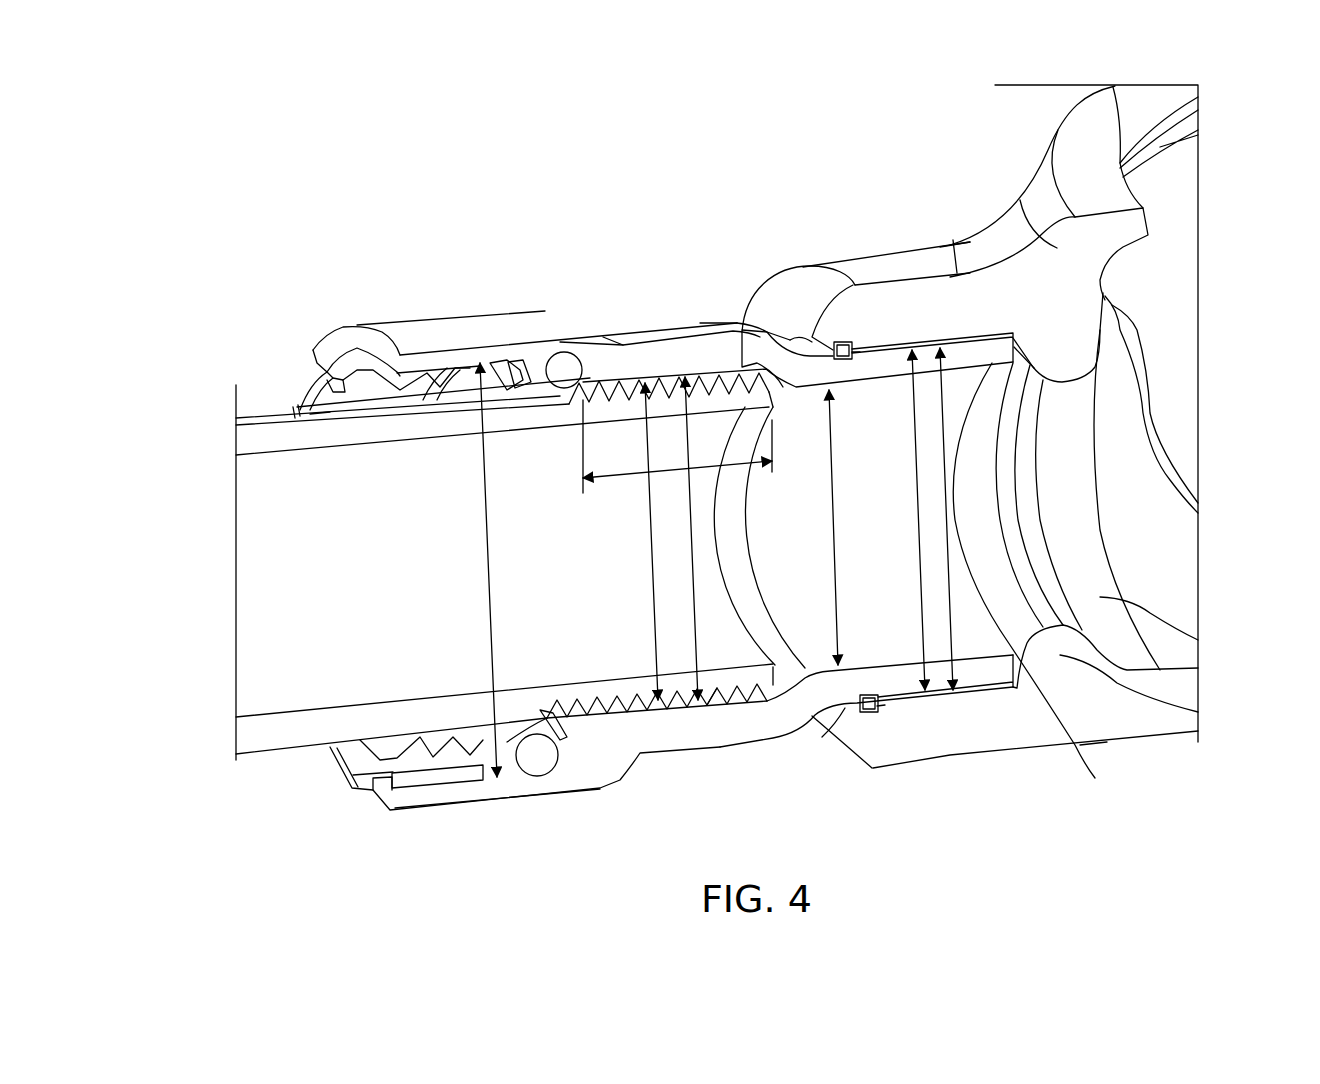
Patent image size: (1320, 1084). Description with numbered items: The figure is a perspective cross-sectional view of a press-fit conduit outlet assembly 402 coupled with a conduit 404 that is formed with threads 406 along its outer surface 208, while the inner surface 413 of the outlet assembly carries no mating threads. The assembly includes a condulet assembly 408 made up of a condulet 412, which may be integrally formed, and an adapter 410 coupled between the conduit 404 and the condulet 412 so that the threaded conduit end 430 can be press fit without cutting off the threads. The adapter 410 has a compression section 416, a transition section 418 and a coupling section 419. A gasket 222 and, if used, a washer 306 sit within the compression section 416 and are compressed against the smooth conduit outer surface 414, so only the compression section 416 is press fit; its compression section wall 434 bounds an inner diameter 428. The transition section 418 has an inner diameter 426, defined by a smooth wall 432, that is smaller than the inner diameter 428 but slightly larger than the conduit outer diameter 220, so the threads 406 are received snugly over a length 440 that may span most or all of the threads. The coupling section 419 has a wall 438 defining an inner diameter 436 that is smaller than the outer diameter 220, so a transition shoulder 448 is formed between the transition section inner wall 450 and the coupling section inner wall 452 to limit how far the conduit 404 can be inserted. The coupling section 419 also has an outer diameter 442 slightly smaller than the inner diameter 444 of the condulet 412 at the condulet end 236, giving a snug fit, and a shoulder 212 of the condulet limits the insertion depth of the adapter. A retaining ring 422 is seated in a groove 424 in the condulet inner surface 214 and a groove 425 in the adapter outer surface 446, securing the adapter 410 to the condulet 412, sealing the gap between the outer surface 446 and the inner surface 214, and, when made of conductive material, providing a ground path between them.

The conduit outlet assembly 402 is at (289, 291).
The conduit 404 is at (219, 439).
The outer surface 208 is at (260, 418).
The smooth conduit outer surface 414 is at (280, 417).
The compression section 416 is at (410, 322).
The adapter 410 is at (491, 310).
The inner surface 413 is at (353, 362).
The washer 306 is at (530, 362).
The gasket 222 is at (563, 352).
The transition section 418 is at (657, 343).
The outer surface 446 is at (730, 333).
The condulet assembly 408 is at (771, 256).
The transition shoulder 448 is at (765, 348).
The condulet end 236 is at (975, 248).
The condulet 412 is at (1075, 153).
The length 440 is at (618, 478).
The inner diameter 436 is at (827, 512).
The outer diameter 442 is at (912, 520).
The inner diameter 426 is at (720, 567).
The outer diameter 220 is at (650, 612).
The inner diameter 428 is at (487, 577).
The groove 425 is at (867, 693).
The conduit end 430 is at (740, 703).
The transition section inner wall 450 is at (710, 707).
The threads 406 is at (640, 713).
The smooth wall 432 is at (617, 743).
The compression section wall 434 is at (517, 788).
The groove 424 is at (870, 713).
The coupling section 419 is at (900, 687).
The retaining ring 422 is at (877, 710).
The wall 438 is at (970, 677).
The coupling section inner wall 452 is at (1082, 780).
The inner diameter 444 is at (1107, 737).
The inner surface 214 is at (1185, 650).
The shoulder 212 is at (1192, 705).